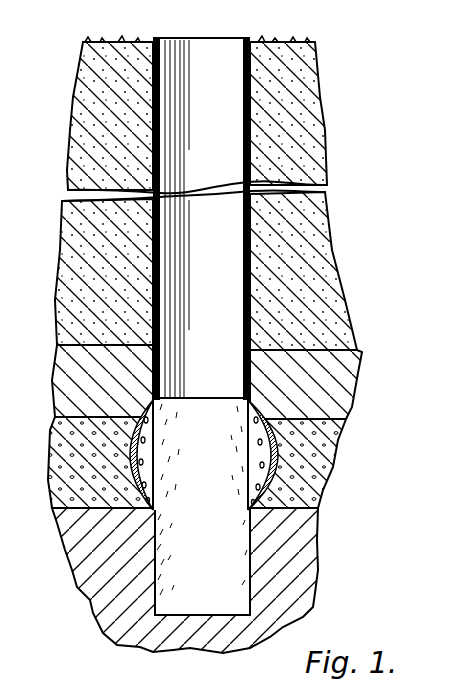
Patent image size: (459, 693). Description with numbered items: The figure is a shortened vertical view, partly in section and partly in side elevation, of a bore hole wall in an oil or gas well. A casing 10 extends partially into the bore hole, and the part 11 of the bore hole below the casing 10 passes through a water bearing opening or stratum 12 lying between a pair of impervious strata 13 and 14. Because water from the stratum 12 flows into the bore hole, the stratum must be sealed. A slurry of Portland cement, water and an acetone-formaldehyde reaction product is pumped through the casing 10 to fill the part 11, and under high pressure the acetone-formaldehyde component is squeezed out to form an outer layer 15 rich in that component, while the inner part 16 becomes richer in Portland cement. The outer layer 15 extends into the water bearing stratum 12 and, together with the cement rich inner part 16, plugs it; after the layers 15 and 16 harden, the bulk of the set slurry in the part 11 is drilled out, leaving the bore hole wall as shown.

The casing 10 is at (206, 307).
The part of the bore hole below the casing 11 is at (212, 585).
The water bearing opening or stratum 12 is at (340, 429).
The impervious stratum 13 is at (343, 385).
The impervious stratum 14 is at (293, 581).
The outer layer 15 is at (330, 461).
The inner part 16 is at (315, 495).